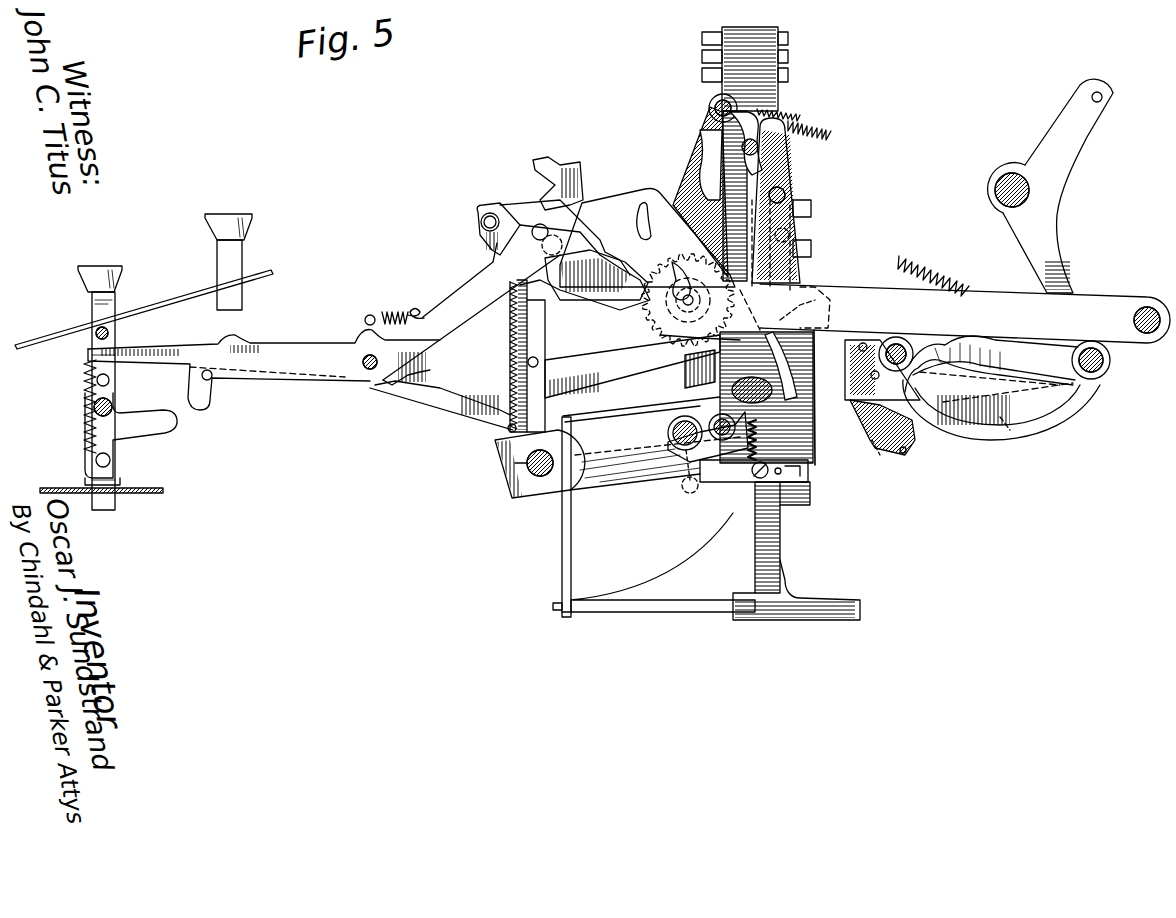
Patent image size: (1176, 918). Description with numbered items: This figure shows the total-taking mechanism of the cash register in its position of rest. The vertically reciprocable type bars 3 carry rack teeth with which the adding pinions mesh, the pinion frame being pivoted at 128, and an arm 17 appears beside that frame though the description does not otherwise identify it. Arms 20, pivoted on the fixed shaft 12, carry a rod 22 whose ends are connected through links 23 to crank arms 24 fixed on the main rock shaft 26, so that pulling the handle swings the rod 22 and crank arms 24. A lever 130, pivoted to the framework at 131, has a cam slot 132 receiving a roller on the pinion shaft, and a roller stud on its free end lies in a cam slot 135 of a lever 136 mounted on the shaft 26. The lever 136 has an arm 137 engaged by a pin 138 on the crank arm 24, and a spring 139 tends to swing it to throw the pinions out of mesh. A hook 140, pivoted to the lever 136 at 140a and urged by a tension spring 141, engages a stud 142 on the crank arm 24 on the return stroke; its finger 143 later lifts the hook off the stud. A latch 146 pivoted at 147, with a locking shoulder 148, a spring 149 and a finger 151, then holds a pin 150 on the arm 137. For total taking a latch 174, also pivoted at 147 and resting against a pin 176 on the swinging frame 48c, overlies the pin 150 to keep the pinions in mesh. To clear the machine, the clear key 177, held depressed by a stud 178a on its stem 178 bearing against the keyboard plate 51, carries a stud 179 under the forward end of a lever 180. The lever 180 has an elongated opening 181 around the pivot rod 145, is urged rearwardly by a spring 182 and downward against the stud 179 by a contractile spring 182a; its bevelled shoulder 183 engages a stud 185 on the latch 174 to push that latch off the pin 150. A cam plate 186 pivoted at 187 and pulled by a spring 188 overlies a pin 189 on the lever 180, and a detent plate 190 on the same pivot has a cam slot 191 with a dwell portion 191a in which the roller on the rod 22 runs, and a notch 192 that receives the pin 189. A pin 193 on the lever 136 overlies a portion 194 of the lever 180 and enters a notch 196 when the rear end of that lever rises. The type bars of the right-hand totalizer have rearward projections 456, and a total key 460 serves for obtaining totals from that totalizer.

The type bars 3 is at (748, 38).
The fixed shaft 12 is at (1020, 185).
The lever arm 17 is at (694, 152).
The arm 20 is at (1043, 240).
The rod 22 is at (1105, 374).
The links 23 is at (1012, 432).
The crank arm 24 is at (605, 478).
The main rock shaft 26 is at (540, 478).
The swinging frame 48c is at (725, 184).
The keyboard plate 51 is at (178, 298).
The pivot 128 is at (710, 105).
The lever 130 is at (852, 287).
The pivot 131 is at (1140, 308).
The cam slot 132 is at (675, 265).
The cam slot 135 is at (576, 300).
The lever 136 is at (507, 336).
The arm 137 is at (646, 486).
The pin 138 is at (668, 431).
The spring 139 is at (752, 468).
The hook 140 is at (656, 312).
The pivot 140a is at (495, 214).
The tension spring 141 is at (536, 342).
The stud 142 is at (690, 397).
The finger 143 is at (572, 175).
The pivot rod 145 is at (368, 372).
The latch 146 is at (815, 452).
The pivot 147 is at (786, 194).
The locking shoulder 148 is at (810, 500).
The spring 149 is at (820, 128).
The pin 150 is at (808, 472).
The finger 151 is at (688, 492).
The latch 174 is at (815, 432).
The pin 176 is at (685, 340).
The clear key 177 is at (84, 279).
The stem 178 is at (90, 304).
The stud 178a is at (96, 336).
The stud 179 is at (110, 376).
The lever 180 is at (183, 346).
The elongated opening 181 is at (413, 372).
The spring 182 is at (385, 318).
The contractile spring 182a is at (84, 368).
The bevelled shoulder 183 is at (802, 307).
The stud 185 is at (822, 288).
The cam plate 186 is at (912, 433).
The pivot 187 is at (897, 343).
The contractile spring 188 is at (922, 262).
The pin 189 is at (905, 455).
The detent plate 190 is at (962, 420).
The cam slot 191 is at (925, 376).
The dwell portion 191a is at (993, 345).
The notch 192 is at (873, 457).
The pin 193 is at (538, 362).
The portion 194 is at (470, 405).
The notch 196 is at (560, 375).
The projections 456 is at (860, 609).
The total key 460 is at (245, 234).